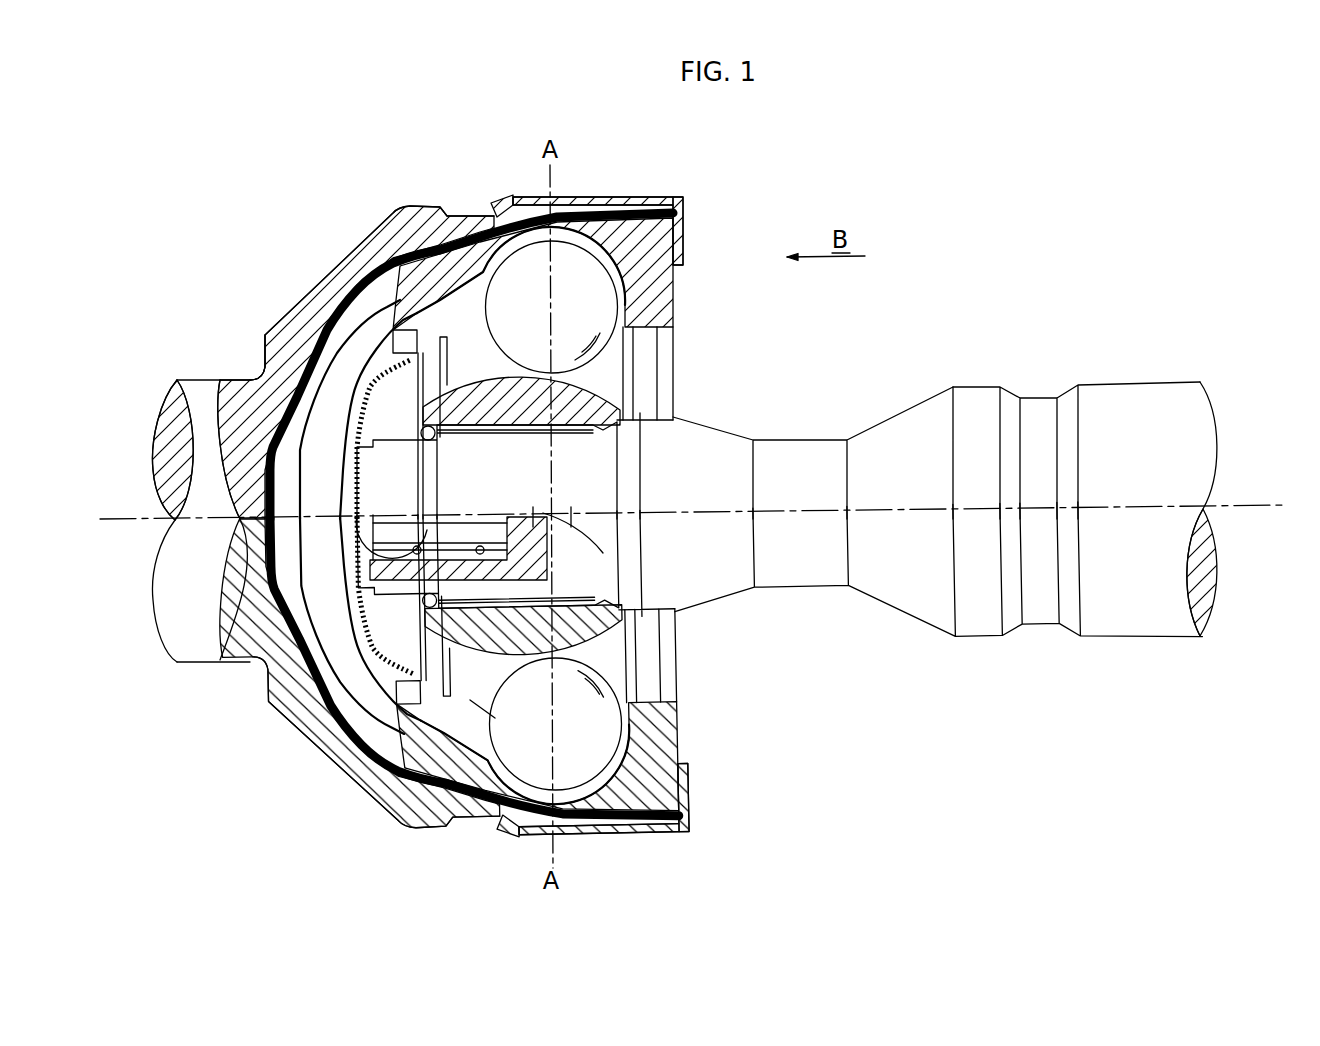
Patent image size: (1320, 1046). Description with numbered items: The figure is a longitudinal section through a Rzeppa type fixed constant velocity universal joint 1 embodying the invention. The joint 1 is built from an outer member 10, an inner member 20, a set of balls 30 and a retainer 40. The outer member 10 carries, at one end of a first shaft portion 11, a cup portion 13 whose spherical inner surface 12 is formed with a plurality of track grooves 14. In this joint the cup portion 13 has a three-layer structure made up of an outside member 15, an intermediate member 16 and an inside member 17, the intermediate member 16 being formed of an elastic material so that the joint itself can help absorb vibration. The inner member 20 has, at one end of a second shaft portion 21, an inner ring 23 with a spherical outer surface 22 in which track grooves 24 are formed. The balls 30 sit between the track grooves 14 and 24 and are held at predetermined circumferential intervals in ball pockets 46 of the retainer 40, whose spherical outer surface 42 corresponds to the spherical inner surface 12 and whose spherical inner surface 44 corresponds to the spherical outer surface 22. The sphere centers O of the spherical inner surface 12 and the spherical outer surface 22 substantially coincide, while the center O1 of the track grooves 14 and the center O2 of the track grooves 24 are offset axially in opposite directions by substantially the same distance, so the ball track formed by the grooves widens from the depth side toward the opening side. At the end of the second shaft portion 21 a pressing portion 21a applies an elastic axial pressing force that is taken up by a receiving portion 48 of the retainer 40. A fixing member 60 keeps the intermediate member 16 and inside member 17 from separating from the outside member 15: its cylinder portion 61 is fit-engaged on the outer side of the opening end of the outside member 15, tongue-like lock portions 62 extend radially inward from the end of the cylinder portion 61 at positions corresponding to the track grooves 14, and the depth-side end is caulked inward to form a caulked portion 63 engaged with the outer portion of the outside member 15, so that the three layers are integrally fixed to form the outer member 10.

The joint 1 is at (783, 210).
The outer member 10 is at (362, 225).
The first shaft portion 11 is at (200, 383).
The spherical inner surface 12 is at (460, 298).
The cup portion 13 is at (277, 327).
The track grooves 14 is at (597, 240).
The outside member 15 is at (340, 268).
The intermediate member 16 is at (292, 322).
The inside member 17 is at (410, 268).
The inner member 20 is at (806, 428).
The second shaft portion 21 is at (1138, 398).
The pressing portion 21a is at (245, 660).
The spherical outer surface 22 is at (477, 710).
The inner ring 23 is at (632, 677).
The track grooves 24 is at (623, 645).
The balls 30 is at (530, 250).
The retainer 40 is at (683, 715).
The spherical outer surface 42 is at (530, 715).
The spherical inner surface 44 is at (473, 740).
The ball pockets 46 is at (601, 735).
The receiving portion 48 is at (348, 443).
The fixing member 60 is at (626, 190).
The cylinder portion 61 is at (660, 197).
The lock portions 62 is at (686, 217).
The caulked portion 63 is at (500, 197).
The sphere centers O is at (603, 553).
The center of the track grooves of the outer member O1 is at (571, 502).
The center of the track grooves of the inner member O2 is at (531, 502).